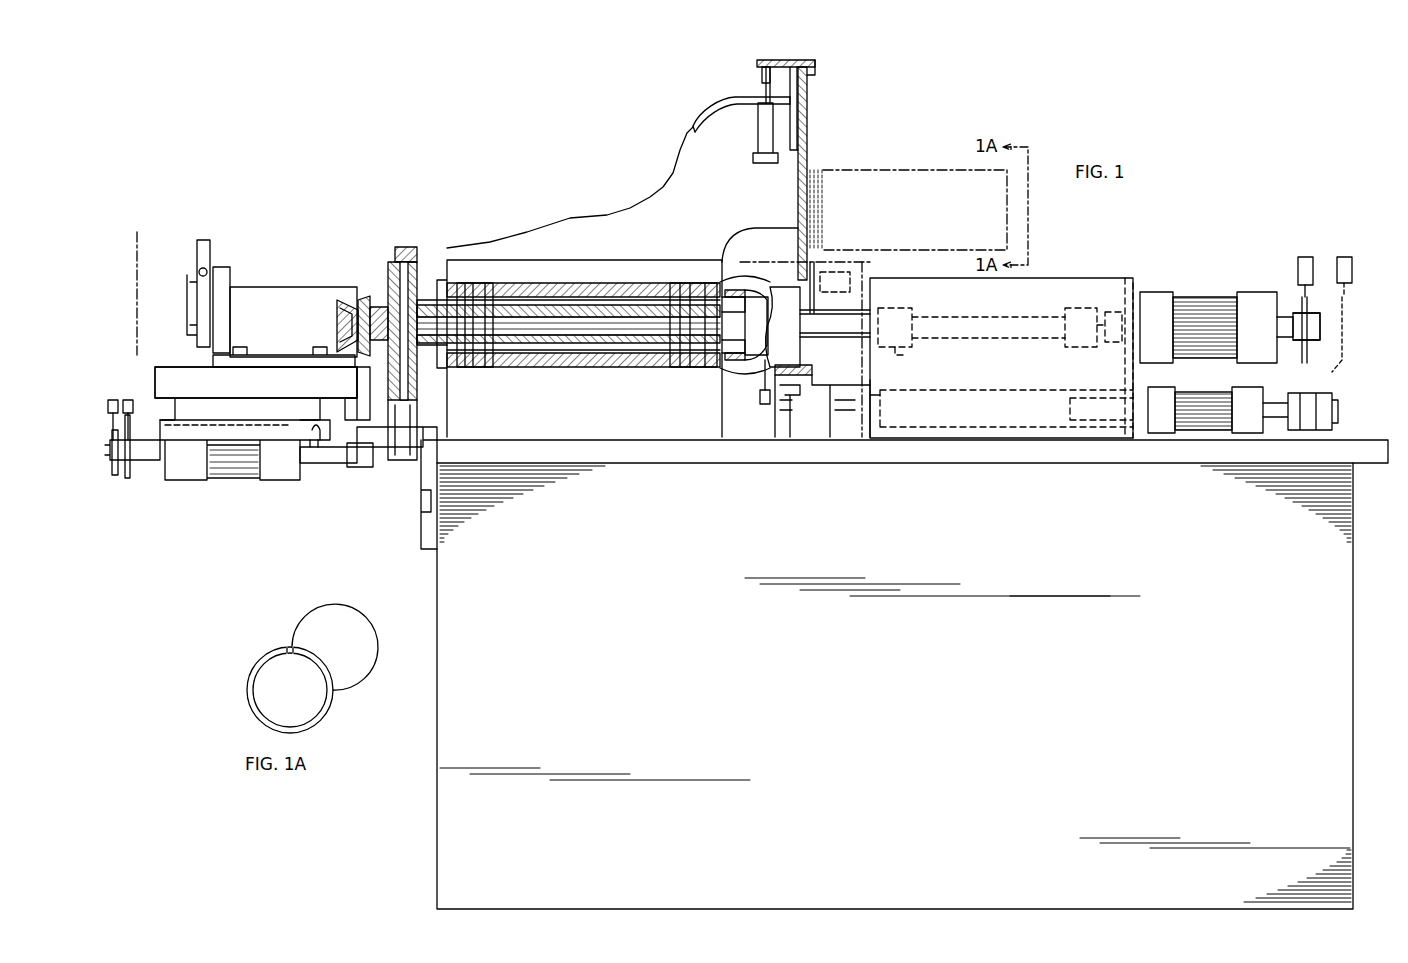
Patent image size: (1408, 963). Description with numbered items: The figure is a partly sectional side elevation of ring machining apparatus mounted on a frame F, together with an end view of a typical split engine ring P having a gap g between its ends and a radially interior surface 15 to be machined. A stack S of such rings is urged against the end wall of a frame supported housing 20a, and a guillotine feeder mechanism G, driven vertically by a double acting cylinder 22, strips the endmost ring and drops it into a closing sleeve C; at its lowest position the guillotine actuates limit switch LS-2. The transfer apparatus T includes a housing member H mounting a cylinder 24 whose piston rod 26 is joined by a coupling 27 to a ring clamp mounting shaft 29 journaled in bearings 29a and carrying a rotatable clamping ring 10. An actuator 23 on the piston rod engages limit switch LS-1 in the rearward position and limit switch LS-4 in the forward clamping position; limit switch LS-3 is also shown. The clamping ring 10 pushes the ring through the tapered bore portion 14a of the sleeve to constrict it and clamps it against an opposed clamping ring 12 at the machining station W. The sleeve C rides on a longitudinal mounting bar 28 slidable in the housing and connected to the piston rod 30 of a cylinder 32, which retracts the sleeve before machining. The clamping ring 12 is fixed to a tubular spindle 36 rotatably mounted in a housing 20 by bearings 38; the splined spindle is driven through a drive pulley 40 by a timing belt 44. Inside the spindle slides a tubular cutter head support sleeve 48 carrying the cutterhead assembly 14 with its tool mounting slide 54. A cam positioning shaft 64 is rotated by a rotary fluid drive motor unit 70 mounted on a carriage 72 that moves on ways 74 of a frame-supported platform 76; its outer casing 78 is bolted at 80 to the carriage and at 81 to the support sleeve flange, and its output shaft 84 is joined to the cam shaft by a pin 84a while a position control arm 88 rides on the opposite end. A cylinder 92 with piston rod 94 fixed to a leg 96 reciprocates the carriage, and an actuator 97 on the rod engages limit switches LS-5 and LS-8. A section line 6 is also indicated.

In FIG. 1, the frame F is at (1356, 519).
In FIG. 1, the timing belt 44 is at (406, 250).
In FIG. 1, the drive pulley 40 is at (389, 258).
In FIG. 1, the frame supported housing 20 is at (699, 214).
In FIG. 1, the tubular spindle 36 is at (604, 288).
In FIG. 1, the tubular cutter head support sleeve 48 is at (562, 305).
In FIG. 1, the cam positioning shaft 64 is at (519, 318).
In FIG. 1, the bearings 38 is at (686, 290).
In FIG. 1, the clamping ring 12 is at (762, 284).
In FIG. 1, the tapered bore portion 14a is at (776, 282).
In FIG. 1, the tool mounting slide 54 is at (766, 356).
In FIG. 1, the cutterhead assembly 14 is at (715, 374).
In FIG. 1, the rotatable clamping ring 10 is at (787, 314).
In FIG. 1, the cylinder 22 is at (760, 148).
In FIG. 1, the limit switch LS-2 is at (762, 76).
In FIG. 1, the frame supported housing 20a is at (800, 190).
In FIG. 1, the split engine ring P is at (810, 180).
In FIG. 1A, the split engine ring P is at (318, 660).
In FIG. 1, the machining station W is at (822, 263).
In FIG. 1, the stack S is at (920, 172).
In FIG. 1, the closing sleeve C is at (783, 270).
In FIG. 1, the guillotine feeder mechanism G is at (846, 116).
In FIG. 1, the limit switch LS-3 is at (766, 404).
In FIG. 1, the longitudinal mounting bar 28 is at (824, 428).
In FIG. 1, the housing member H is at (1050, 280).
In FIG. 1, the ring clamp mounting shaft 29 is at (921, 318).
In FIG. 1, the bearings 29a is at (1066, 314).
In FIG. 1, the coupling 27 is at (1112, 314).
In FIG. 1, the piston rod 26 is at (1126, 348).
In FIG. 1, the piston rod 30 is at (1115, 420).
In FIG. 1, the cylinder 24 is at (1191, 300).
In FIG. 1, the actuator 23 is at (1303, 358).
In FIG. 1, the limit switch LS-4 is at (1305, 257).
In FIG. 1, the limit switch LS-1 is at (1344, 257).
In FIG. 1, the cylinder 32 is at (1212, 433).
In FIG. 1, the transfer apparatus T is at (1187, 239).
In FIG. 1, the rotary fluid drive motor unit 70 is at (278, 269).
In FIG. 1, the section line 6 is at (150, 232).
In FIG. 1, the limit switch actuating and position control arm 88 is at (210, 252).
In FIG. 1, the outer casing 78 is at (323, 285).
In FIG. 1, the bolts 80 is at (310, 348).
In FIG. 1, the output shaft 84 is at (336, 328).
In FIG. 1, the pin 84a is at (340, 312).
In FIG. 1, the bolts 81 is at (370, 300).
In FIG. 1, the carriage 72 is at (250, 391).
In FIG. 1, the leg 96 is at (346, 400).
In FIG. 1, the frame-supported platform 76 is at (398, 435).
In FIG. 1, the cylinder 92 is at (248, 474).
In FIG. 1, the piston rod 94 is at (334, 464).
In FIG. 1, the ways 74 is at (318, 452).
In FIG. 1, the actuator 97 is at (130, 476).
In FIG. 1, the limit switch LS-8 is at (108, 400).
In FIG. 1, the limit switch LS-5 is at (128, 400).
In FIG. 1A, the radially interior surface 15 is at (322, 690).
In FIG. 1A, the gap g is at (290, 645).